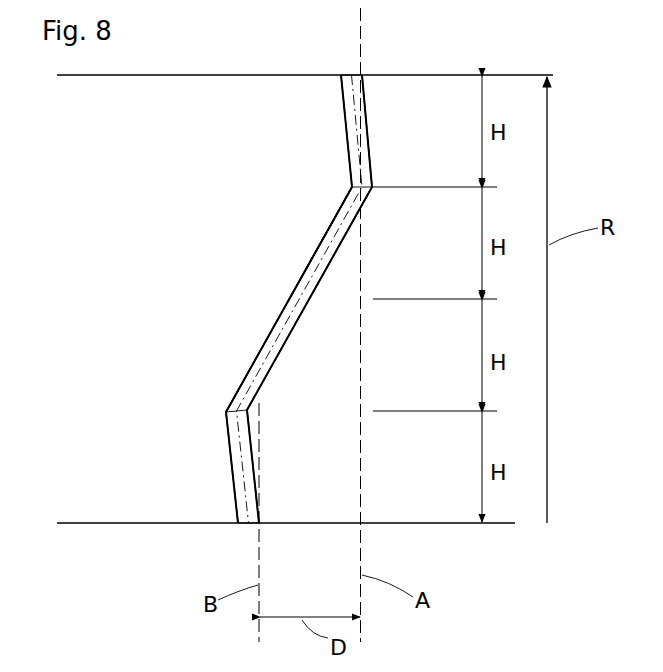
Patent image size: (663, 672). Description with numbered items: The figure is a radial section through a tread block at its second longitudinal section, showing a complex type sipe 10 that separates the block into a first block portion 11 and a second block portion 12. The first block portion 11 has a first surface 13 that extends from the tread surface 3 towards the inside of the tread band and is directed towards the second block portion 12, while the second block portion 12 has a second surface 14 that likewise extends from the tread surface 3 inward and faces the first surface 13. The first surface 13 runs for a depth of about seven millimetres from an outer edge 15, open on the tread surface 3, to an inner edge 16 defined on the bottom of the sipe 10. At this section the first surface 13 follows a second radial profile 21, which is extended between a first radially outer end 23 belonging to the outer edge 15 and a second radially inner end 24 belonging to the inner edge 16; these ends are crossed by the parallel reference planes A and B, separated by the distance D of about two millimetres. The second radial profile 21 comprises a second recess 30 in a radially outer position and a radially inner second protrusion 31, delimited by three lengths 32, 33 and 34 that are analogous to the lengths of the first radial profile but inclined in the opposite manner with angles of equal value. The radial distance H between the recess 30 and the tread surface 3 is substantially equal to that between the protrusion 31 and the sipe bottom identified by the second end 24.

The tread surface 3 is at (175, 70).
The complex type sipe 10 is at (309, 293).
The first block portion 11 is at (443, 389).
The second block portion 12 is at (130, 324).
The first surface 13 is at (285, 338).
The second surface 14 is at (290, 298).
The outer edge 15 is at (410, 42).
The inner edge 16 is at (297, 550).
The second radial profile 21 is at (344, 219).
The first radially outer end 23 is at (361, 75).
The second radially inner end 24 is at (259, 525).
The second recess 30 is at (373, 186).
The second protrusion 31 is at (226, 412).
The first length of second profile 32 is at (368, 125).
The second length of second profile 33 is at (337, 262).
The third length of second profile 34 is at (252, 455).